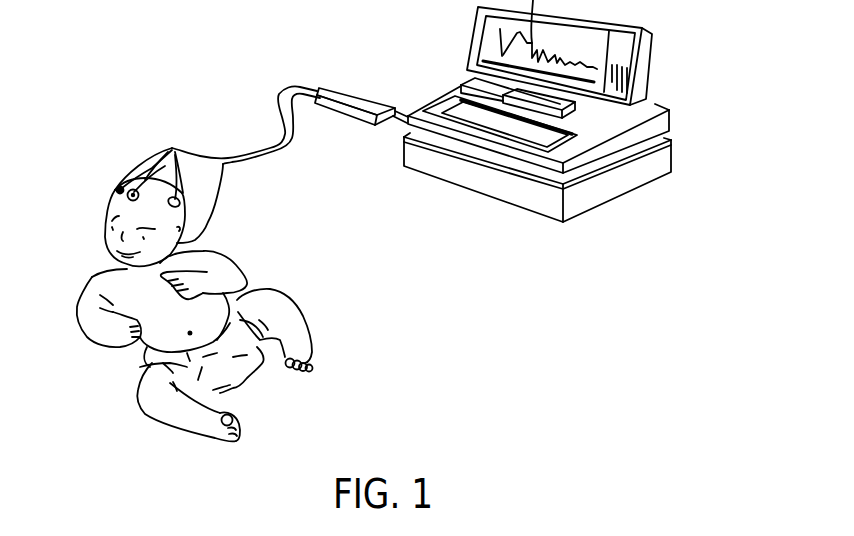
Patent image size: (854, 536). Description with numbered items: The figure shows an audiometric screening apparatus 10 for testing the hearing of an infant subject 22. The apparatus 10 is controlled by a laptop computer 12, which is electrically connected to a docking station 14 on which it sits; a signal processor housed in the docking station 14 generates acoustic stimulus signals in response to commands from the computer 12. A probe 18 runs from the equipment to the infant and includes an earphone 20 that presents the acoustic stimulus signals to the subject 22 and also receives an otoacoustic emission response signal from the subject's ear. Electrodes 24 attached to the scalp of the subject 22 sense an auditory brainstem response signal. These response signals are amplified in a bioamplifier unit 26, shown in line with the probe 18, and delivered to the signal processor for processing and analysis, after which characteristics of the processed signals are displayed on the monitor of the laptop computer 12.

The apparatus 10 is at (463, 290).
The laptop computer 12 is at (672, 125).
The docking station 14 is at (672, 165).
The probe 18 is at (272, 85).
The earphone 20 is at (197, 241).
The subject 22 is at (91, 277).
The electrodes 24 is at (118, 152).
The bioamplifier unit 26 is at (362, 100).